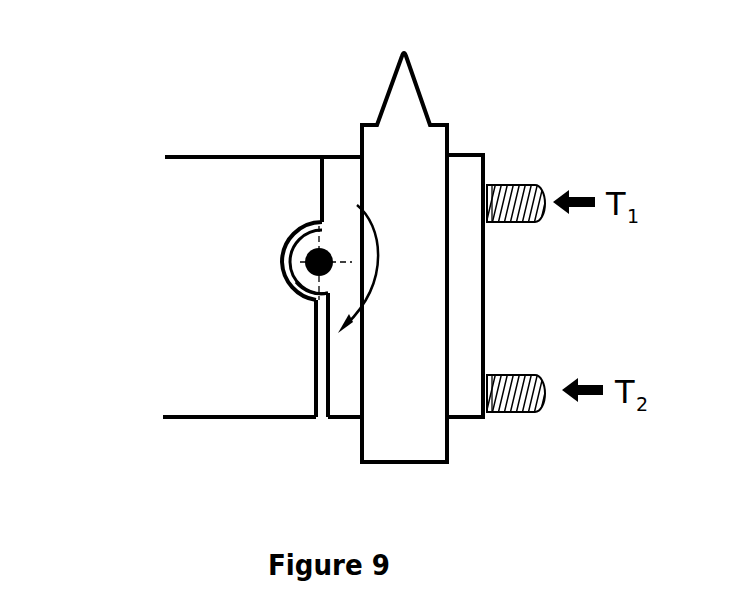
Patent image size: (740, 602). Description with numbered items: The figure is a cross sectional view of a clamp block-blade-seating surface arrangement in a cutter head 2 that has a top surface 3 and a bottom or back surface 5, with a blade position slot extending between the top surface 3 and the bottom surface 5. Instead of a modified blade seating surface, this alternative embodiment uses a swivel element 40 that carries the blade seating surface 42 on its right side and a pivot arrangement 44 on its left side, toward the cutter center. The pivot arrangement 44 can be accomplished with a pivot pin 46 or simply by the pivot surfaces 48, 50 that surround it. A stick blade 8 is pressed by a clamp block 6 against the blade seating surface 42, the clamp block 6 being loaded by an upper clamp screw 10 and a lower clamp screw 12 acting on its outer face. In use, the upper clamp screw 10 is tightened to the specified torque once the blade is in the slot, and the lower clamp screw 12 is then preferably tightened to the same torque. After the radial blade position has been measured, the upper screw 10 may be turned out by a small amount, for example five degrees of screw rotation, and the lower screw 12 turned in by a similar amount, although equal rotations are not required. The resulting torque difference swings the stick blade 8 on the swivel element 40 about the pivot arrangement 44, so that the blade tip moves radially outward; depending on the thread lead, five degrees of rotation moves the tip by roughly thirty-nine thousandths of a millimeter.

The cutter head 2 is at (221, 292).
The top surface 3 is at (184, 157).
The bottom surface 5 is at (250, 419).
The clamp block 6 is at (476, 178).
The stick blade 8 is at (421, 80).
The upper clamp screw 10 is at (508, 226).
The lower clamp screw 12 is at (512, 375).
The swivel element 40 is at (337, 167).
The blade seating surface 42 is at (357, 383).
The pivot arrangement 44 is at (298, 300).
The pivot pin 46 is at (308, 263).
The pivot surface 48 is at (281, 262).
The pivot surface 50 is at (283, 290).